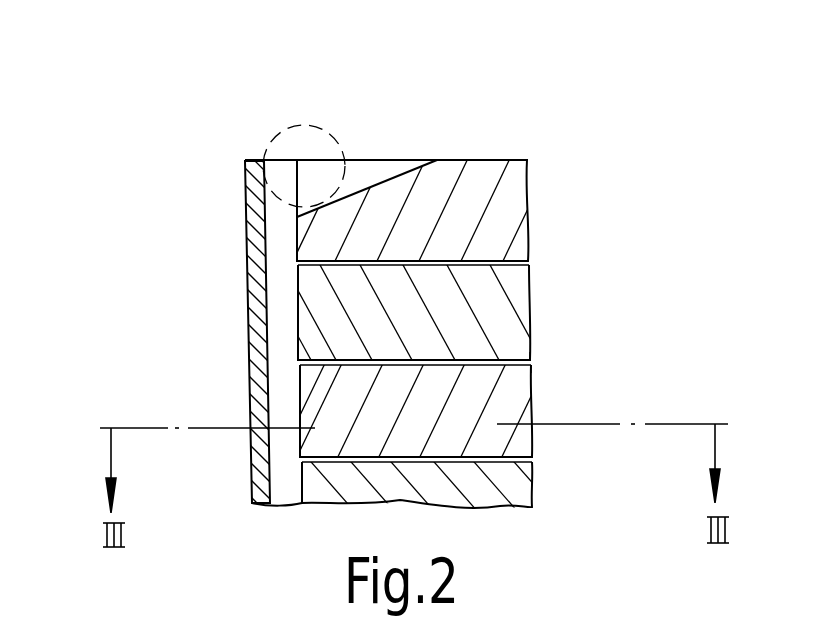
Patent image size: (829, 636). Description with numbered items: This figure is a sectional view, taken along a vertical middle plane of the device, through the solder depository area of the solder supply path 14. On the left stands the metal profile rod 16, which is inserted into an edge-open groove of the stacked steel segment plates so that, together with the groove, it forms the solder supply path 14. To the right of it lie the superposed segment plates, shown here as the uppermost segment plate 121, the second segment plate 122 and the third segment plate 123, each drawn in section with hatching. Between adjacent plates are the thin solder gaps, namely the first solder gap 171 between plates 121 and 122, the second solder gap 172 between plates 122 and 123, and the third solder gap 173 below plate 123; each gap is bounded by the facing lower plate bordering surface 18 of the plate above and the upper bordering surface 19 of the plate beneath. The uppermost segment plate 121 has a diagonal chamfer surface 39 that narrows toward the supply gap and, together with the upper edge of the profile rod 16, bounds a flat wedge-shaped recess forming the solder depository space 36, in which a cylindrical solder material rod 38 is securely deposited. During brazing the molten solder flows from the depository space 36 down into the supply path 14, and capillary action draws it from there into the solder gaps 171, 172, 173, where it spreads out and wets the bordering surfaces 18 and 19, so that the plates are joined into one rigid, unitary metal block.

The solder supply path 14 is at (262, 130).
The metal profile rod 16 is at (247, 292).
The lower plate bordering surface 18 is at (483, 363).
The upper bordering surface 19 is at (483, 363).
The solder depository space 36 is at (362, 160).
The solder material rod 38 is at (315, 150).
The diagonal chamfer surface 39 is at (407, 172).
The uppermost segment plate 121 is at (505, 197).
The second segment plate 122 is at (531, 295).
The third segment plate 123 is at (513, 409).
The first solder gap 171 is at (530, 262).
The second solder gap 172 is at (533, 361).
The third solder gap 173 is at (533, 460).